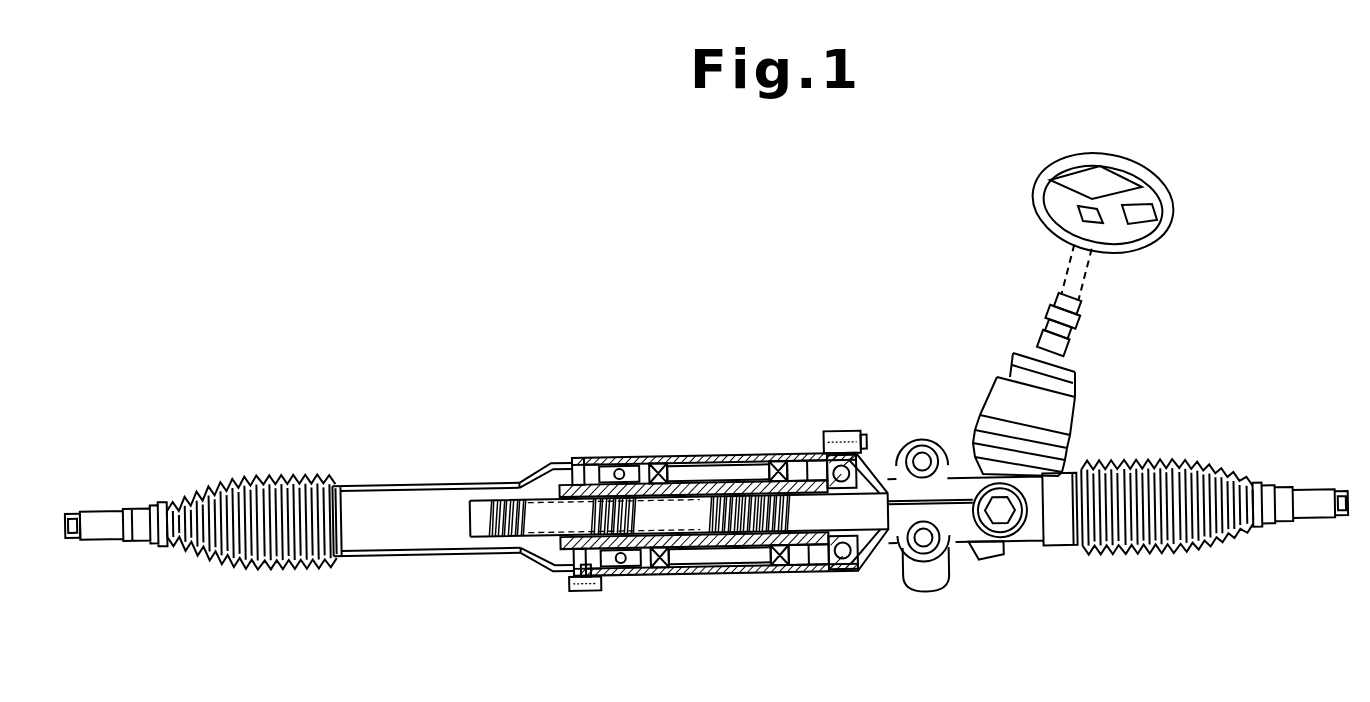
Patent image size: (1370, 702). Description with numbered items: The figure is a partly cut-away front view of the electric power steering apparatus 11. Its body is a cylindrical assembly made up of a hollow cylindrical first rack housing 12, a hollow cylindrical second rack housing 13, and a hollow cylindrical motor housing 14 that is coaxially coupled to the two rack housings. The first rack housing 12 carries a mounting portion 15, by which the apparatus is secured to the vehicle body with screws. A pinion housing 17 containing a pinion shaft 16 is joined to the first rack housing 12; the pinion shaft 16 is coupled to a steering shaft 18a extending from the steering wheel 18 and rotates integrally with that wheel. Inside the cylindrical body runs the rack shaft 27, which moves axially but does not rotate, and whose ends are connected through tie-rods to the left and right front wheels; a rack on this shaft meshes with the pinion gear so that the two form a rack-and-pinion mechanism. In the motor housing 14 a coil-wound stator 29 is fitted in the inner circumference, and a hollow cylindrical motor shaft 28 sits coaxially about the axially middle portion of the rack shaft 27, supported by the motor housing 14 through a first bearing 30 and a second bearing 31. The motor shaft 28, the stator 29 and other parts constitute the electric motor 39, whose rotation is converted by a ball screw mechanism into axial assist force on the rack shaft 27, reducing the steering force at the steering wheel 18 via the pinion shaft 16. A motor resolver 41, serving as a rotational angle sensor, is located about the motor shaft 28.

The electric power steering apparatus 11 is at (914, 608).
The first rack housing 12 is at (888, 470).
The second rack housing 13 is at (490, 481).
The motor housing 14 is at (683, 455).
The mounting portion 15 is at (947, 583).
The pinion shaft 16 is at (1080, 311).
The pinion housing 17 is at (996, 388).
The steering wheel 18 is at (1175, 212).
The steering shaft 18a is at (1065, 262).
The rack shaft 27 is at (547, 528).
The motor shaft 28 is at (727, 466).
The stator 29 is at (694, 564).
The first bearing 30 is at (613, 577).
The second bearing 31 is at (860, 575).
The electric motor 39 is at (755, 444).
The motor resolver 41 is at (810, 577).